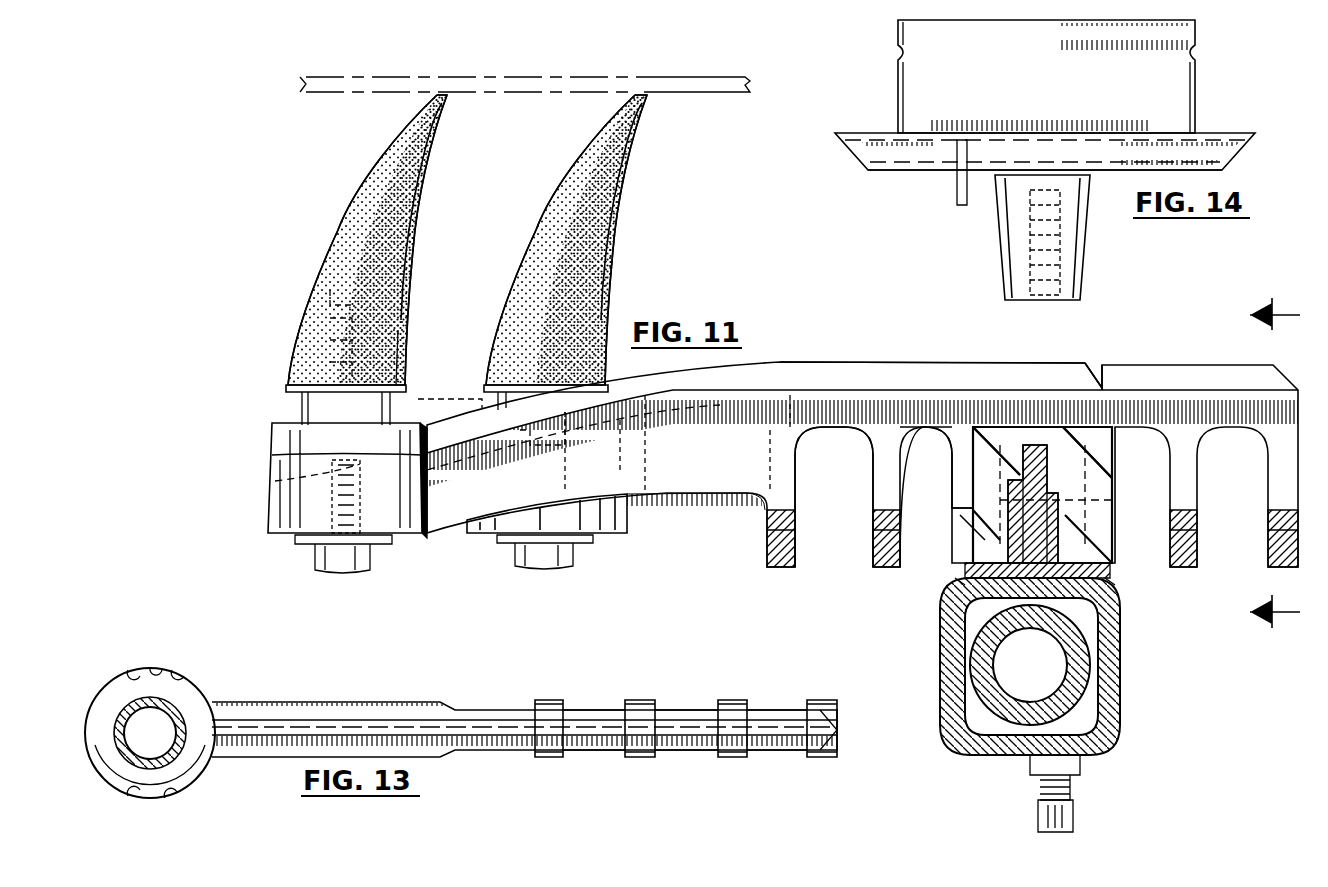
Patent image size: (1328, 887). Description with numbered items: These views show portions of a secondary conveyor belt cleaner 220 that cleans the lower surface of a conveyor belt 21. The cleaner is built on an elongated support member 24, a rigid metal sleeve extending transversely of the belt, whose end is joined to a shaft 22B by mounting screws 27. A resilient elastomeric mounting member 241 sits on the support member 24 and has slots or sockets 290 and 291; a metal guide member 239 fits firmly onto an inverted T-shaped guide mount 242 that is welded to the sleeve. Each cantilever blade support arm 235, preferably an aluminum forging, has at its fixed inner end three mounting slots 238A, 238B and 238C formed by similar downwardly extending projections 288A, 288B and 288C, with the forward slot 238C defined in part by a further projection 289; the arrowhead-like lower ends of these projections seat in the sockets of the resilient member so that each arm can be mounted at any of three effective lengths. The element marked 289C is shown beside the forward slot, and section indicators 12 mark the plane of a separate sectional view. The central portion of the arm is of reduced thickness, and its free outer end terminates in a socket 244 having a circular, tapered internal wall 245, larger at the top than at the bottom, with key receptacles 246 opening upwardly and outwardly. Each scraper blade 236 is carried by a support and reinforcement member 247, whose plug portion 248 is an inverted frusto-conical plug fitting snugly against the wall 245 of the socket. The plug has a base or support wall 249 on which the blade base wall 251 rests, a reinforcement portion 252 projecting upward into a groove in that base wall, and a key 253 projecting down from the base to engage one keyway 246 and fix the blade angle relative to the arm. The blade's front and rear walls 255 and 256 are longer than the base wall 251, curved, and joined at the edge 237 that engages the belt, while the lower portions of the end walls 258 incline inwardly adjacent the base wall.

In FIG. 11, the conveyor belt 21 is at (372, 77).
In FIG. 11, the edge 237 is at (437, 95).
In FIG. 11, the scraper blade 236 is at (393, 252).
In FIG. 11, the front wall 255 is at (340, 193).
In FIG. 11, the rear wall 256 is at (648, 159).
In FIG. 11, the end walls 258 is at (538, 290).
In FIG. 11, the key 253 is at (300, 339).
In FIG. 14, the key 253 is at (955, 195).
In FIG. 11, the support and reinforcement member 247 is at (490, 370).
In FIG. 14, the support and reinforcement member 247 is at (1213, 107).
In FIG. 11, the base wall 251 is at (394, 399).
In FIG. 11, the secondary conveyor belt cleaner 220 is at (781, 348).
In FIG. 11, the cantilever support arm 235 is at (918, 388).
In FIG. 13, the cantilever support arm 235 is at (406, 693).
In FIG. 11, the section line 12 is at (1276, 462).
In FIG. 11, the socket 244 is at (288, 538).
In FIG. 13, the socket 244 is at (98, 690).
In FIG. 11, the key receptacles 246 is at (358, 444).
In FIG. 13, the key receptacles 246 is at (178, 668).
In FIG. 11, the tapered internal wall 245 is at (262, 481).
In FIG. 13, the tapered internal wall 245 is at (188, 700).
In FIG. 11, the mounting slot 238A is at (1040, 438).
In FIG. 13, the mounting slot 238A is at (788, 757).
In FIG. 11, the mounting slot 238B is at (930, 567).
In FIG. 13, the mounting slot 238B is at (693, 757).
In FIG. 11, the forward mounting slot 238C is at (829, 566).
In FIG. 13, the forward mounting slot 238C is at (603, 757).
In FIG. 11, the resilient elastomeric mounting member 241 is at (965, 444).
In FIG. 11, the projection 288B is at (972, 487).
In FIG. 13, the projection 288B is at (731, 700).
In FIG. 11, the projection 288A is at (1090, 514).
In FIG. 13, the projection 288A is at (823, 700).
In FIG. 13, the projection 288C is at (636, 698).
In FIG. 11, the projection 289 is at (762, 545).
In FIG. 13, the projection 289 is at (548, 762).
In FIG. 11, the retainer C 289C is at (880, 545).
In FIG. 11, the socket 291 is at (955, 534).
In FIG. 11, the guide member 239 is at (1085, 491).
In FIG. 11, the socket 290 is at (1104, 563).
In FIG. 11, the guide mount 242 is at (1106, 584).
In FIG. 11, the support member 24 is at (1120, 689).
In FIG. 11, the shaft 22B is at (1082, 659).
In FIG. 11, the mounting screws 27 is at (1075, 817).
In FIG. 14, the reinforcement portion 252 is at (918, 89).
In FIG. 14, the support wall portion 249 is at (896, 170).
In FIG. 14, the plug portion 248 is at (1082, 287).